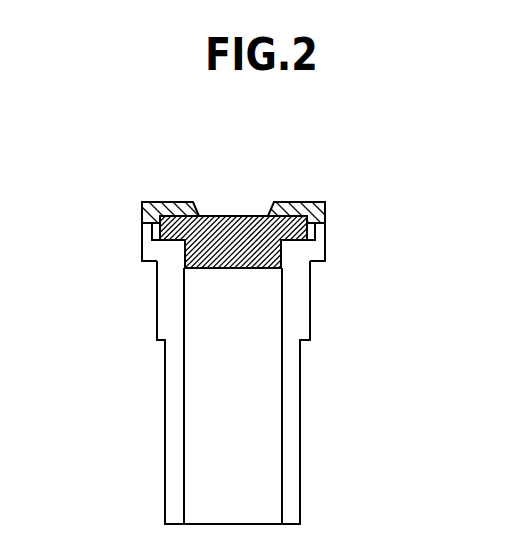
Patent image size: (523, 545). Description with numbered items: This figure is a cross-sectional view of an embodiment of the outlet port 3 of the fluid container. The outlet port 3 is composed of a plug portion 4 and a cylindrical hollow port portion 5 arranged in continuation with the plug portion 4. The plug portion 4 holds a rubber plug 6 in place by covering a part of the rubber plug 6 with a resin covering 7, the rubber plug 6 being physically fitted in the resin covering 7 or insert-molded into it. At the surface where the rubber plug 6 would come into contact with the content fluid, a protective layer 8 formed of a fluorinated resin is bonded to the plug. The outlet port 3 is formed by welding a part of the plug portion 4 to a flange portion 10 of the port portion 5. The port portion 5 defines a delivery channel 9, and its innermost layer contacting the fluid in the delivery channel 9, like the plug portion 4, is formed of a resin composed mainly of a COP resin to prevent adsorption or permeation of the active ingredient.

The outlet port 3 is at (456, 89).
The plug portion 4 is at (350, 202).
The port portion 5 is at (347, 362).
The rubber plug 6 is at (237, 230).
The resin covering 7 is at (157, 213).
The protective layer 8 is at (230, 268).
The delivery channel 9 is at (235, 400).
The flange portion 10 is at (155, 245).